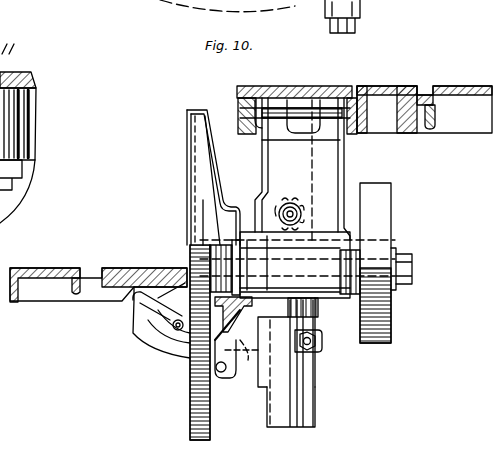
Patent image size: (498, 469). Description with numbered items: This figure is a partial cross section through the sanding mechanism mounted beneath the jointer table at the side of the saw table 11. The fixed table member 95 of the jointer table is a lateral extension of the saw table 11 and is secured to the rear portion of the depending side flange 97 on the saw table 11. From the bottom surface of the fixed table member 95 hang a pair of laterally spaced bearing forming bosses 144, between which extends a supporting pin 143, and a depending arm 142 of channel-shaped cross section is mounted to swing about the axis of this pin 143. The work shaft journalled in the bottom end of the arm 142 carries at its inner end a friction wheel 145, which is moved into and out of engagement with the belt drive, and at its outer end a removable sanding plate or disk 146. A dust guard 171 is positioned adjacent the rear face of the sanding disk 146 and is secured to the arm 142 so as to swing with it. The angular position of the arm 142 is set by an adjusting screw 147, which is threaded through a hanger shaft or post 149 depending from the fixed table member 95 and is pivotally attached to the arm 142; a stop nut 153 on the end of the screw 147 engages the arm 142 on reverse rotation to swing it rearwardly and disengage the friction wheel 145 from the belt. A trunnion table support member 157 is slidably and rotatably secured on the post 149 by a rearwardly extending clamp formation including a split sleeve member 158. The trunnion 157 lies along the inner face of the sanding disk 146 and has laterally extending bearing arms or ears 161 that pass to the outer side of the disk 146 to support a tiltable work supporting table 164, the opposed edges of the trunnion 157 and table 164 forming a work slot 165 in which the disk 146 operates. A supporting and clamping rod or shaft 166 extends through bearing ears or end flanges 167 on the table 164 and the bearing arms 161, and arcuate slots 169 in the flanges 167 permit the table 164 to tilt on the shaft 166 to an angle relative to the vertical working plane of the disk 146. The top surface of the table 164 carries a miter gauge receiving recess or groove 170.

The saw table 11 is at (466, 86).
The depending side flange 97 is at (392, 86).
The fixed table member 95 is at (314, 86).
The supporting pin 143 is at (290, 100).
The bearing forming boss 144 is at (349, 98).
The depending arm 142 is at (330, 156).
The stop nut 153 is at (303, 204).
The adjusting screw 147 is at (300, 214).
The friction wheel 145 is at (385, 198).
The sanding plate or disk 146 is at (187, 148).
The dust guard 171 is at (200, 108).
The work slot 165 is at (186, 270).
The miter gauge receiving recess or groove 170 is at (85, 270).
The tiltable work supporting table 164 is at (46, 290).
The arcuate slot 169 is at (143, 330).
The bearing ear or end flange 167 is at (152, 347).
The supporting and clamping rod or shaft 166 is at (178, 343).
The bearing arm or ear 161 is at (180, 345).
The trunnion table support member 157 is at (245, 345).
The split sleeve member 158 is at (318, 367).
The hanger shaft or post 149 is at (316, 408).